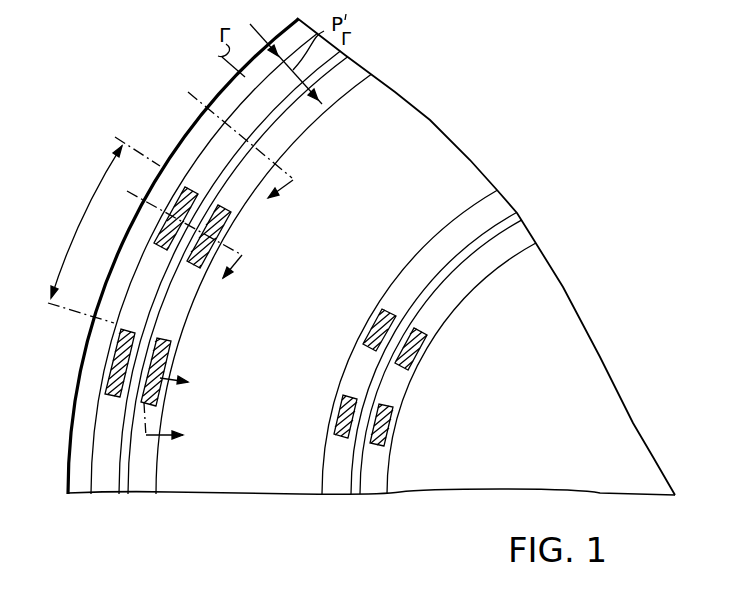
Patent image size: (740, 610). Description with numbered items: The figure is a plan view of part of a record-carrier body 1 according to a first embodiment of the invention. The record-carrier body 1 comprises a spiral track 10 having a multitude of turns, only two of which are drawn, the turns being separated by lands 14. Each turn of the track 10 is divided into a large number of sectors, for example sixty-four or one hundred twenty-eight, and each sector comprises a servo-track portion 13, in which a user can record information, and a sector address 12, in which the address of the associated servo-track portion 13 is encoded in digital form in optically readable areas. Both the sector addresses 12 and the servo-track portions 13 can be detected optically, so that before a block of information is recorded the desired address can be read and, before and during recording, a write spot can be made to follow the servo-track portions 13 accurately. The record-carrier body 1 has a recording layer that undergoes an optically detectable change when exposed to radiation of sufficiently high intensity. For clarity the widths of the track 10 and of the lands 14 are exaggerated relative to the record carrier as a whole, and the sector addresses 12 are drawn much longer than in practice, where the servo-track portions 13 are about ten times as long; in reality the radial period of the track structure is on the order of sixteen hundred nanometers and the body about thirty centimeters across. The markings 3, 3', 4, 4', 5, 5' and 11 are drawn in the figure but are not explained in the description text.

The record-carrier body 1 is at (614, 279).
The section line 3 is at (226, 135).
The section line 3' is at (275, 203).
The section line 4 is at (171, 223).
The section line 4' is at (224, 283).
The section line 5 is at (184, 382).
The section line 5' is at (177, 426).
The spiral track 10 is at (105, 488).
The angular region 11 is at (88, 200).
The sector address 12 is at (155, 353).
The servo-track portion 13 is at (173, 295).
The land 14 is at (120, 490).